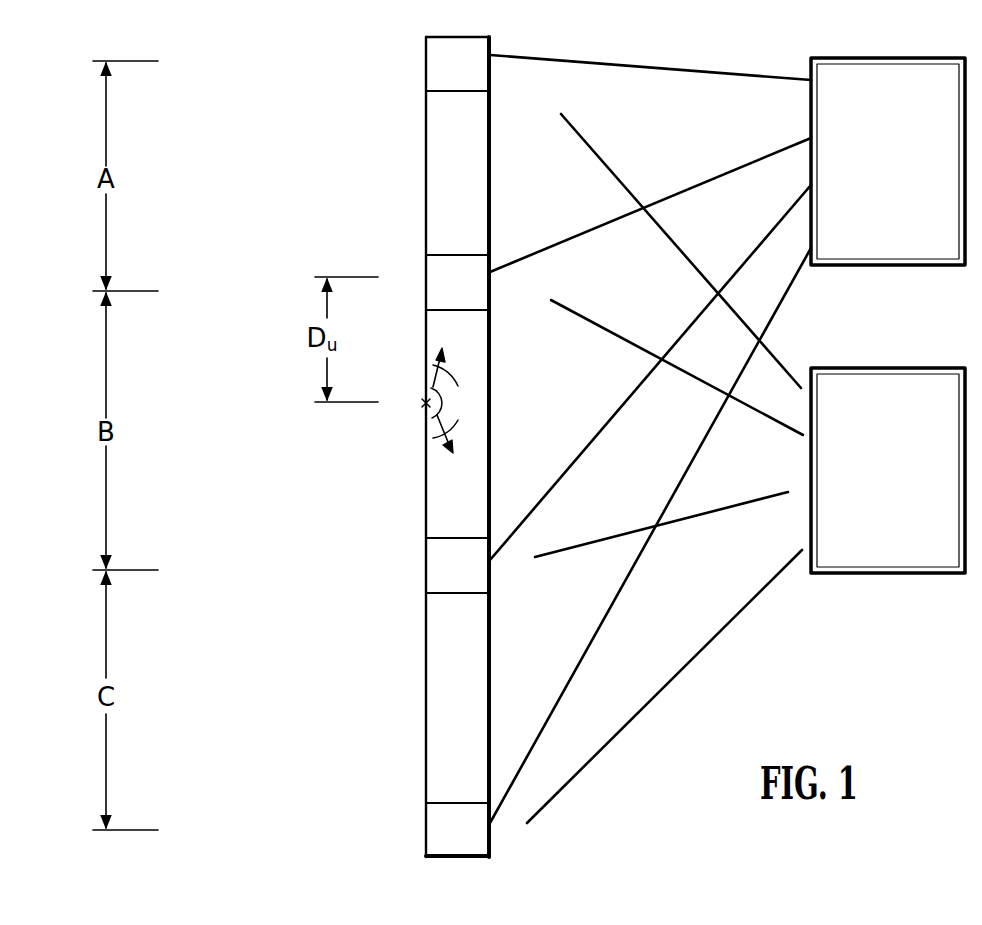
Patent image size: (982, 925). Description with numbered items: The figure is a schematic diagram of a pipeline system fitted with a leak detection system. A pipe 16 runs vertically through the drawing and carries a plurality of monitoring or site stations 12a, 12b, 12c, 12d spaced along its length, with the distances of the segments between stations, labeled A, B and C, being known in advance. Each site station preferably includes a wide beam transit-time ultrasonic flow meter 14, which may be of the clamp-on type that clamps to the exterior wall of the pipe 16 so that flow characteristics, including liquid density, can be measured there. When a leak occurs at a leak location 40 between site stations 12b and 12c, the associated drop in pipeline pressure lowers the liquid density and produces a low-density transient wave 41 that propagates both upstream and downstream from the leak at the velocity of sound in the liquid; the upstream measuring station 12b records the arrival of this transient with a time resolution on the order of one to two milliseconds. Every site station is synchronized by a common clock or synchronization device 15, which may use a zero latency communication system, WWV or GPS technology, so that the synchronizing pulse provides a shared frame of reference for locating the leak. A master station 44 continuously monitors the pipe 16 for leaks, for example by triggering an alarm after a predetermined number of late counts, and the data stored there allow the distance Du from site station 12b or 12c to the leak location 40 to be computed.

The site station 12a is at (426, 66).
The site station 12b is at (426, 272).
The site station 12c is at (426, 563).
The site station 12d is at (430, 822).
The wide beam transit-time ultrasonic flow meter 14 is at (480, 46).
The synchronization device 15 is at (874, 527).
The pipe 16 is at (410, 698).
The leak location 40 is at (423, 402).
The low-density transient wave 41 is at (452, 428).
The master station 44 is at (874, 217).